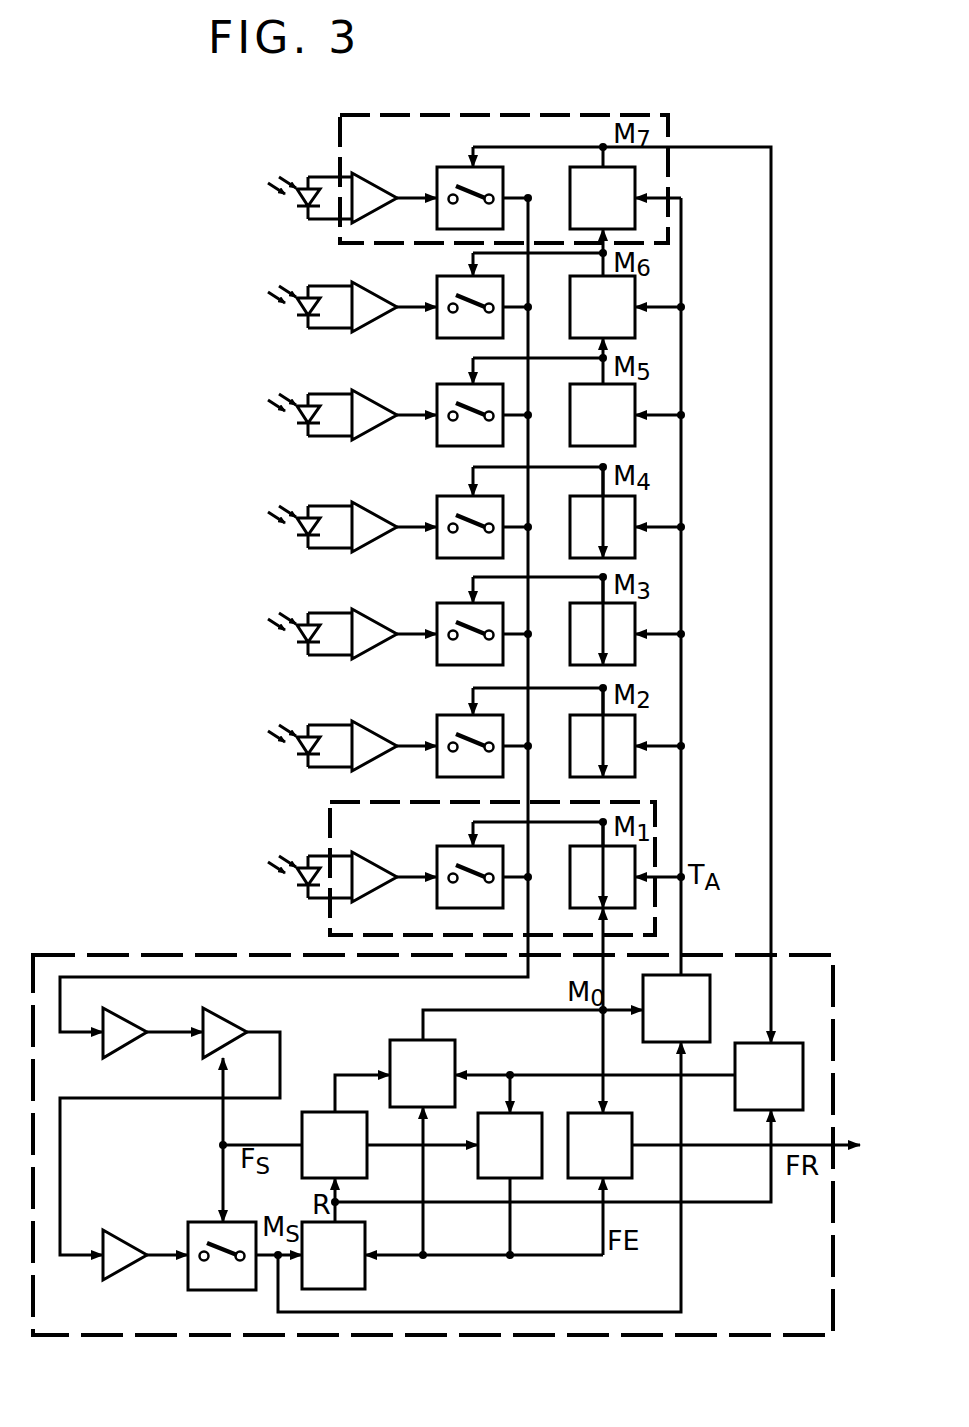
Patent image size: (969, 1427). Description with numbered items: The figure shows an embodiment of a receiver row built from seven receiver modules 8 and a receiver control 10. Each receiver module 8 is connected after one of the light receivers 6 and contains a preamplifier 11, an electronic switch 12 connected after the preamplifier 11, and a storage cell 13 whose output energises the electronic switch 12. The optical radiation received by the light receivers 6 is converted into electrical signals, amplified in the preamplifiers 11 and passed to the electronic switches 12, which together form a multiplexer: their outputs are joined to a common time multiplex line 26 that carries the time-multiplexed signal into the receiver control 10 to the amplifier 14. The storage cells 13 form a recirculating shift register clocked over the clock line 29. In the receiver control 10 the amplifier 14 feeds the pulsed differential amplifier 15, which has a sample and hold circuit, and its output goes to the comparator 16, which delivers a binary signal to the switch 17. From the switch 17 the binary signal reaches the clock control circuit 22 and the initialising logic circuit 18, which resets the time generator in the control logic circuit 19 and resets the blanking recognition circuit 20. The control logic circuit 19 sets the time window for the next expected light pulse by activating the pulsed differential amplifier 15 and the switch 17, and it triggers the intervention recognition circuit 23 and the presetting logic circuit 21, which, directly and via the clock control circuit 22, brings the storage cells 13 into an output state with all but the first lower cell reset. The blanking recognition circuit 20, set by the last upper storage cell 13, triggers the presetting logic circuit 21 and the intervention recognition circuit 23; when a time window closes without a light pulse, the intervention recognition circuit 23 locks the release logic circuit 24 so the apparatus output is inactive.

The light receiver 6 is at (302, 186).
The receiver module 8 is at (340, 146).
The receiver control 10 is at (103, 953).
The preamplifier 11 is at (372, 189).
The electronic switch 12 is at (455, 167).
The storage cell 13 is at (614, 214).
The amplifier 14 is at (103, 1046).
The pulsed differential amplifier 15 is at (205, 1046).
The comparator 16 is at (103, 1268).
The switch 17 is at (193, 1282).
The initialising logic circuit 18 is at (321, 1271).
The control logic circuit 19 is at (322, 1160).
The blanking recognition circuit 20 is at (757, 1092).
The presetting logic circuit 21 is at (410, 1089).
The clock control circuit 22 is at (664, 1024).
The intervention recognition circuit 23 is at (498, 1161).
The release logic circuit 24 is at (588, 1161).
The common time multiplex line 26 is at (255, 977).
The clock line 29 is at (682, 604).